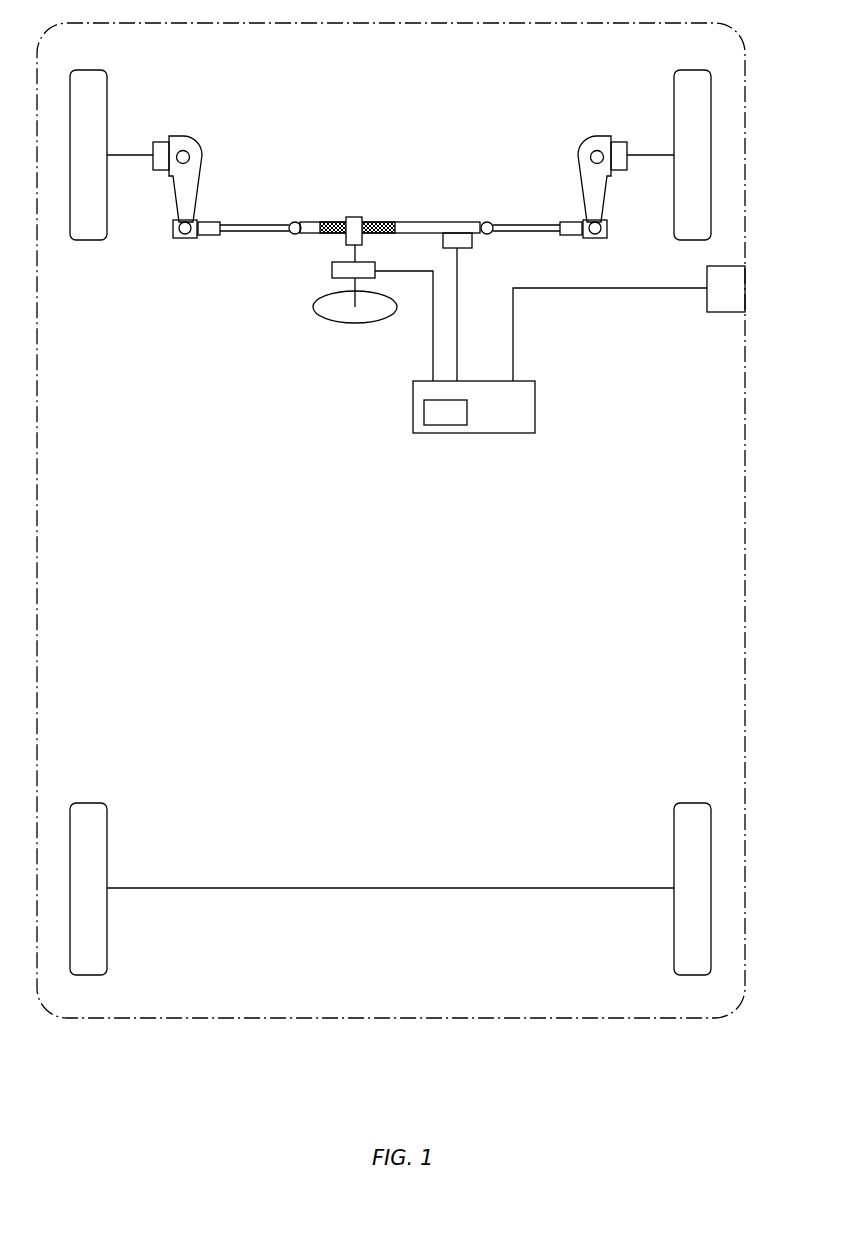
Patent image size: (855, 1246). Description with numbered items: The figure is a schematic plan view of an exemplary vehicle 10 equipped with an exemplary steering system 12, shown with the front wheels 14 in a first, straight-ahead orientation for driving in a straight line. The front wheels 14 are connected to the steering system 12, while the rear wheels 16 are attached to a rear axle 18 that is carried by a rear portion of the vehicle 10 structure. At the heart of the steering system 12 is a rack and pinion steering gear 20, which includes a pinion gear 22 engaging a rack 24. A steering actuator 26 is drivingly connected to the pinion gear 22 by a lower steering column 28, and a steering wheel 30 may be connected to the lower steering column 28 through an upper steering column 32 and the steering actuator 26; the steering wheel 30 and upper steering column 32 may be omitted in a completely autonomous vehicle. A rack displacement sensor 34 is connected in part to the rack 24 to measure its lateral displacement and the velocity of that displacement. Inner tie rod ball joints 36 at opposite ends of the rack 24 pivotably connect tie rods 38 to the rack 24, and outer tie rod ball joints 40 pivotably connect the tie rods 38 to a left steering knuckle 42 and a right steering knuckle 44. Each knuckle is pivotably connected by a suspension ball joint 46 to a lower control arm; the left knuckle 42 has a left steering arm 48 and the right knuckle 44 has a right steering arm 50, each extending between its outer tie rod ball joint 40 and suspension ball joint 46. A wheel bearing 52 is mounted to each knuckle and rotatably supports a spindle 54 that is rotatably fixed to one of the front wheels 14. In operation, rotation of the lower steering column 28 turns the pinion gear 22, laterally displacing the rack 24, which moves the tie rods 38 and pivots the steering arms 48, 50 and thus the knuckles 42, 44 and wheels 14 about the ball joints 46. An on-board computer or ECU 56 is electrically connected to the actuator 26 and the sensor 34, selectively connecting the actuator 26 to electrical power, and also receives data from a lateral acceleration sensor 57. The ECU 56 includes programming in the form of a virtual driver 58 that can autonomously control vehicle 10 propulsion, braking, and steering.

The vehicle 10 is at (745, 98).
The steering system 12 is at (478, 115).
The front wheels 14 is at (107, 83).
The rear wheels 16 is at (108, 817).
The rear axle 18 is at (353, 888).
The rack and pinion steering gear 20 is at (437, 221).
The pinion gear 22 is at (345, 238).
The rack 24 is at (372, 220).
The steering actuator 26 is at (332, 267).
The lower steering column 28 is at (360, 257).
The steering wheel 30 is at (320, 320).
The upper steering column 32 is at (358, 288).
The rack displacement sensor 34 is at (472, 242).
The inner tie rod ball joints 36 is at (295, 222).
The tie rods 38 is at (237, 237).
The outer tie rod ball joints 40 is at (173, 232).
The left steering knuckle 42 is at (176, 192).
The right steering knuckle 44 is at (582, 198).
The suspension ball joint 46 is at (192, 155).
The left steering arm 48 is at (197, 200).
The right steering arm 50 is at (607, 192).
The wheel bearing 52 is at (162, 142).
The spindle 54 is at (127, 150).
The on-board computer (ECU) 56 is at (535, 393).
The lateral acceleration sensor 57 is at (707, 300).
The virtual driver 58 is at (432, 427).